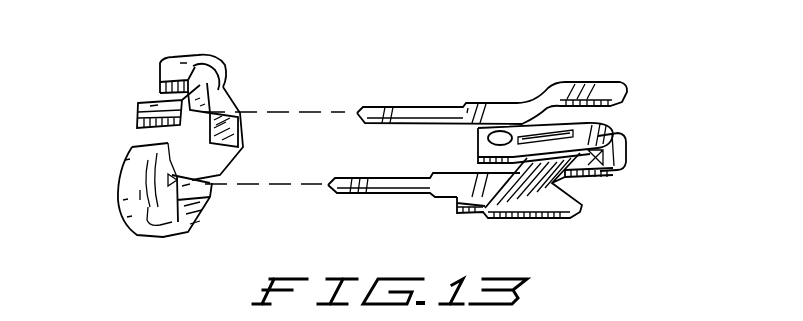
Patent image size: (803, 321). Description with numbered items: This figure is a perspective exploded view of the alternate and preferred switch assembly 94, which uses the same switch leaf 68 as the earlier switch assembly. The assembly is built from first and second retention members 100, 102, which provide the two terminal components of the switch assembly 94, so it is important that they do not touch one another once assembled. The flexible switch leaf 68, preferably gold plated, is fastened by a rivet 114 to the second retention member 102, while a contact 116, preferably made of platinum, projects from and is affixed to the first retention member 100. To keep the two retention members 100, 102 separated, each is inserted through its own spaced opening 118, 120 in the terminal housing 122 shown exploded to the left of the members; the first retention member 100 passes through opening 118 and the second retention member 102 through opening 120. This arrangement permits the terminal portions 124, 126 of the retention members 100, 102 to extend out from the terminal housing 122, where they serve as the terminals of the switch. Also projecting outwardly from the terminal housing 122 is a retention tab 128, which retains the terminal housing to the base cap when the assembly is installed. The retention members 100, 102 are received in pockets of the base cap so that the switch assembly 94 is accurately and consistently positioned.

The switch leaf 68 is at (600, 122).
The switch assembly 94 is at (356, 199).
The first retention member 100 is at (580, 212).
The second retention member 102 is at (590, 88).
The rivet 114 is at (507, 131).
The contact 116 is at (617, 141).
The opening 118 is at (180, 233).
The opening 120 is at (224, 93).
The terminal housing 122 is at (137, 212).
The terminal portion 124 is at (345, 177).
The terminal portion 126 is at (402, 76).
The retention tab 128 is at (138, 103).